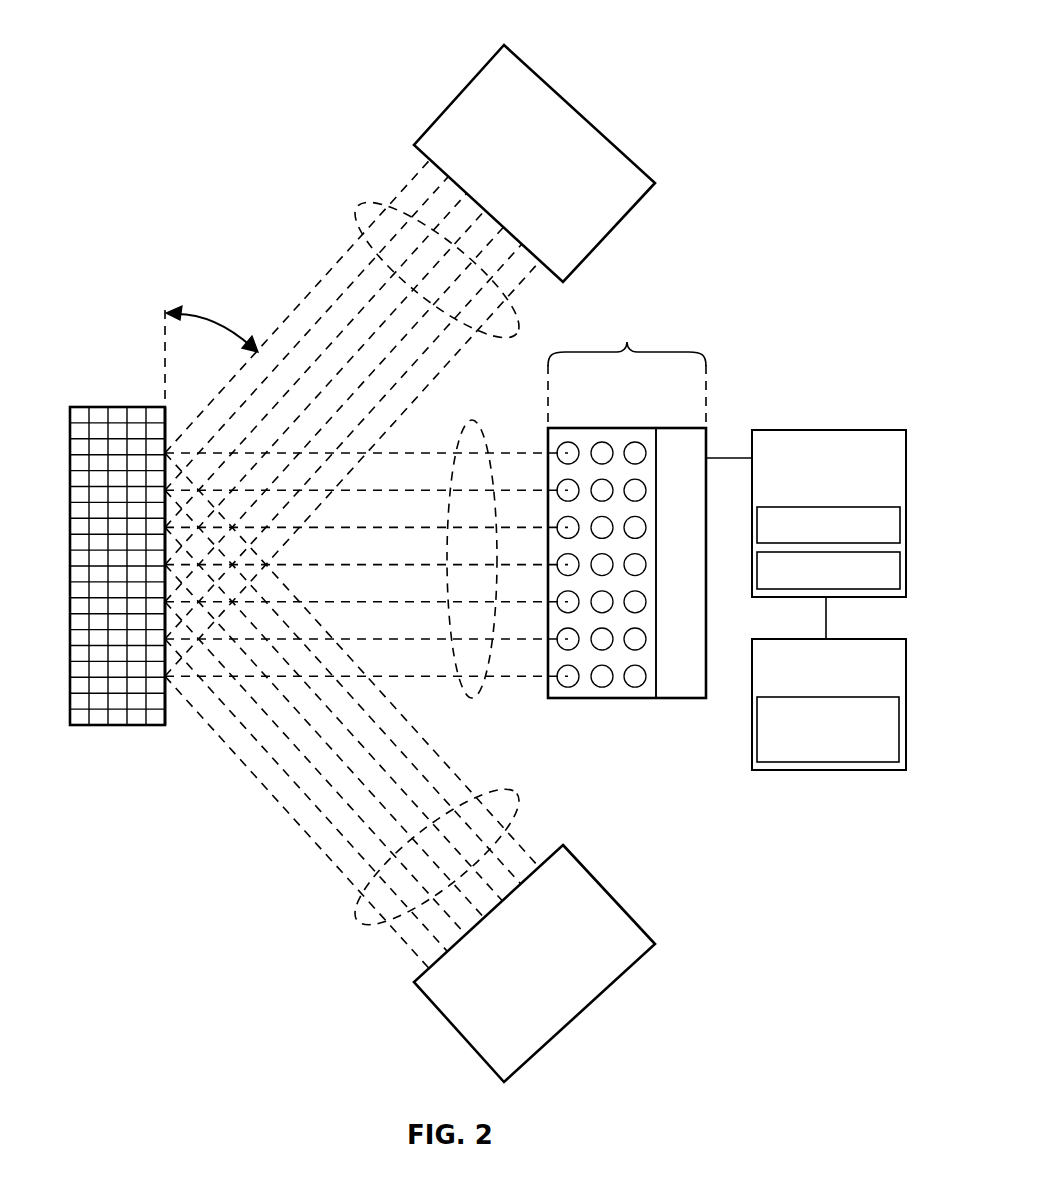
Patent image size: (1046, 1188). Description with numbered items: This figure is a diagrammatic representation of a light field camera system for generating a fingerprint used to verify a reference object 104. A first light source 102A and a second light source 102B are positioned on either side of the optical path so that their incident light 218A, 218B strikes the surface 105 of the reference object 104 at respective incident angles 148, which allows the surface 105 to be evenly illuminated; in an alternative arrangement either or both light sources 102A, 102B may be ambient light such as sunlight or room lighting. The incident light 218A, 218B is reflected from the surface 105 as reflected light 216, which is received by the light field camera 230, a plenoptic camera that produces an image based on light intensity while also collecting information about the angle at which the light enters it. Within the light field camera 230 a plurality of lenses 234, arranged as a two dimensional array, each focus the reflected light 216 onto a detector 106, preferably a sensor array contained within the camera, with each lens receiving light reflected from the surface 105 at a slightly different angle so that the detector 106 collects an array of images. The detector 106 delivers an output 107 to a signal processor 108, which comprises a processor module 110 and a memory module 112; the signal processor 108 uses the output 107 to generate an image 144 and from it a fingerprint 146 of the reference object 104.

The first light source 102A is at (457, 96).
The second light source 102B is at (585, 1012).
The reference object 104 is at (95, 727).
The surface 105 is at (165, 727).
The detector 106 is at (682, 428).
The output 107 is at (732, 462).
The signal processor 108 is at (826, 430).
The processor module 110 is at (900, 523).
The memory module 112 is at (900, 575).
The image 144 is at (780, 639).
The fingerprint 146 is at (843, 770).
The incident angle 148 is at (216, 321).
The reflected light 216 is at (473, 425).
The incident light 218A is at (362, 205).
The incident light 218B is at (512, 791).
The light field camera 230 is at (627, 371).
The plurality of lenses 234 is at (645, 699).